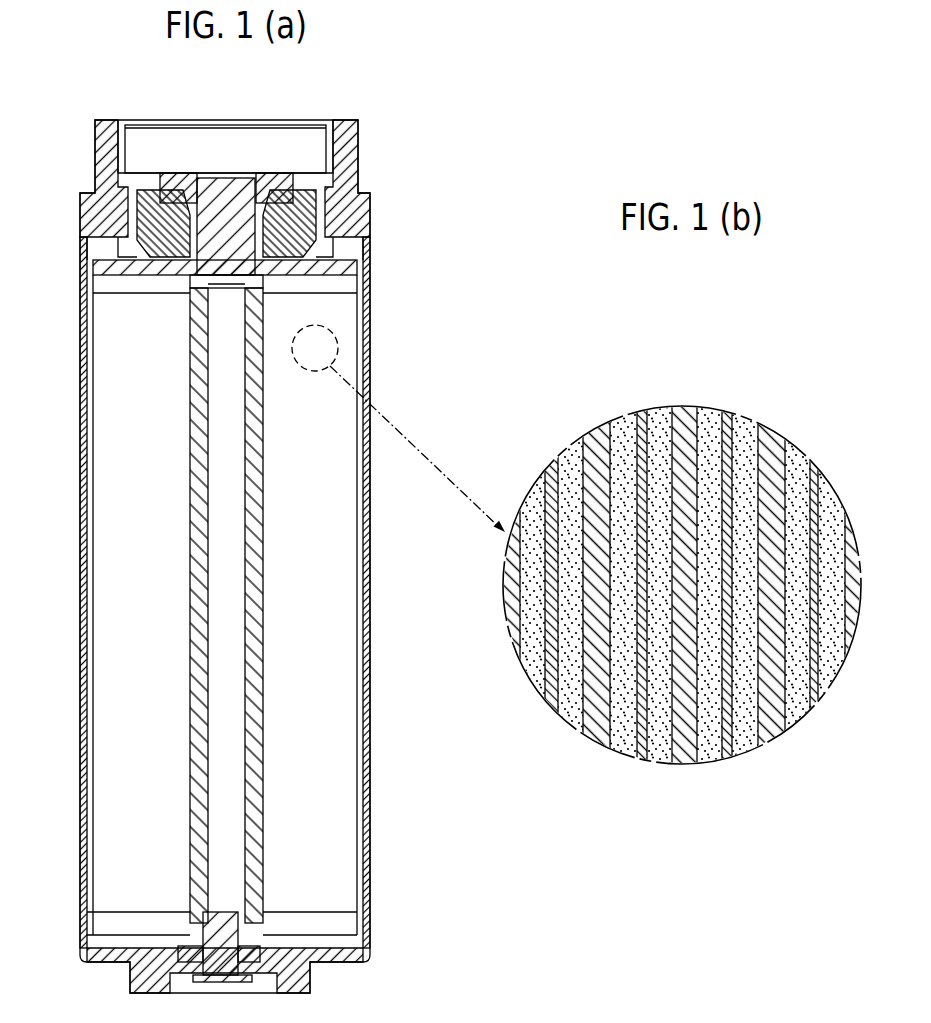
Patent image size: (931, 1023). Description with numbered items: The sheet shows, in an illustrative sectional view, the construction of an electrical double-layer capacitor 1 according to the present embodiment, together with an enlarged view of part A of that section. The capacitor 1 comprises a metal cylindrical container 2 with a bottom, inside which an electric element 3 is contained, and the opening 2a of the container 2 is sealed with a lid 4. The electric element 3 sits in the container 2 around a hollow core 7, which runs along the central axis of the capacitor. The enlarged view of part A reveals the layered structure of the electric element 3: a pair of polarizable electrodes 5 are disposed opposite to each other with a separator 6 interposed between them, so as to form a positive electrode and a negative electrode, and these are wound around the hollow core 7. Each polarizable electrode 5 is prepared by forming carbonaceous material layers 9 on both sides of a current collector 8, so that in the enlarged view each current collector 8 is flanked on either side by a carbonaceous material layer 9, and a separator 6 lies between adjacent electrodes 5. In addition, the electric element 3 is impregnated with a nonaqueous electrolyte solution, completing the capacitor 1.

The electrical double-layer capacitor 1 is at (394, 96).
The metal cylindrical container 2 is at (367, 515).
The opening 2a is at (394, 219).
The electric element 3 is at (330, 670).
The lid 4 is at (360, 160).
The polarizable electrode 5 is at (673, 322).
The separator 6 is at (684, 414).
The hollow core 7 is at (190, 528).
The current collector 8 is at (640, 414).
The carbonaceous material layer 9 is at (617, 416).
The part A is at (338, 343).